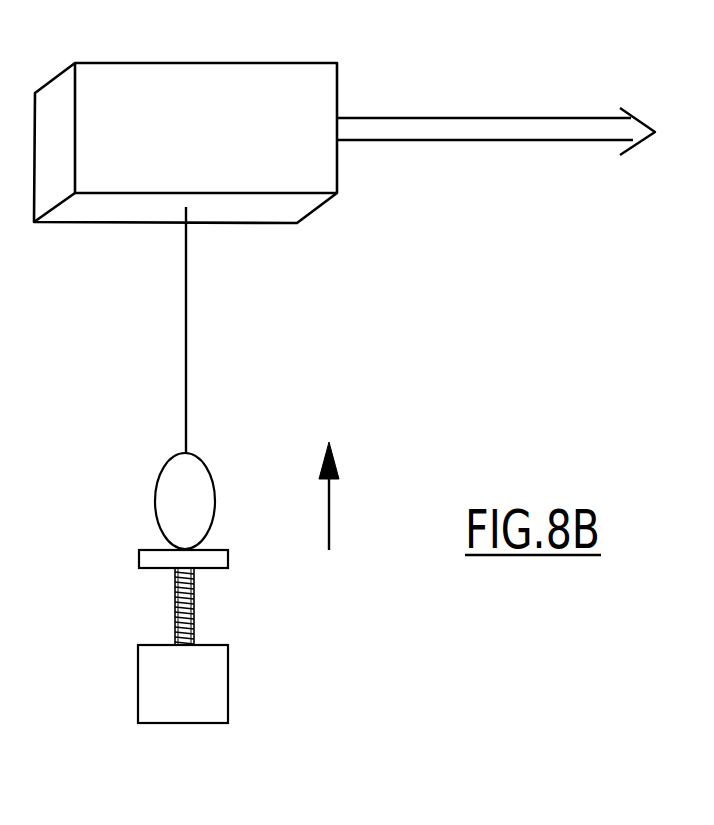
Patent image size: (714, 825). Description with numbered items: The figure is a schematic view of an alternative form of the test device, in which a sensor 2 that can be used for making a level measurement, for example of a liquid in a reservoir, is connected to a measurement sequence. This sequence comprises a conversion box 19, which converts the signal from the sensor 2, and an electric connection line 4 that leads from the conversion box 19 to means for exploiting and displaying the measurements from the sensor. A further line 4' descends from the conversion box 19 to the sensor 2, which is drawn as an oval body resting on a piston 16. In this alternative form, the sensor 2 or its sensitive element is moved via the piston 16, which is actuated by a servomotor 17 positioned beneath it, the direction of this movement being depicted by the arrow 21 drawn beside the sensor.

The conversion box 19 is at (133, 62).
The electric connection line 4 is at (496, 111).
The vertical beam / probe rod 4' is at (214, 330).
The sensor 2 is at (198, 470).
The piston 16 is at (217, 558).
The servomotor 17 is at (218, 687).
The arrow 21 is at (329, 512).